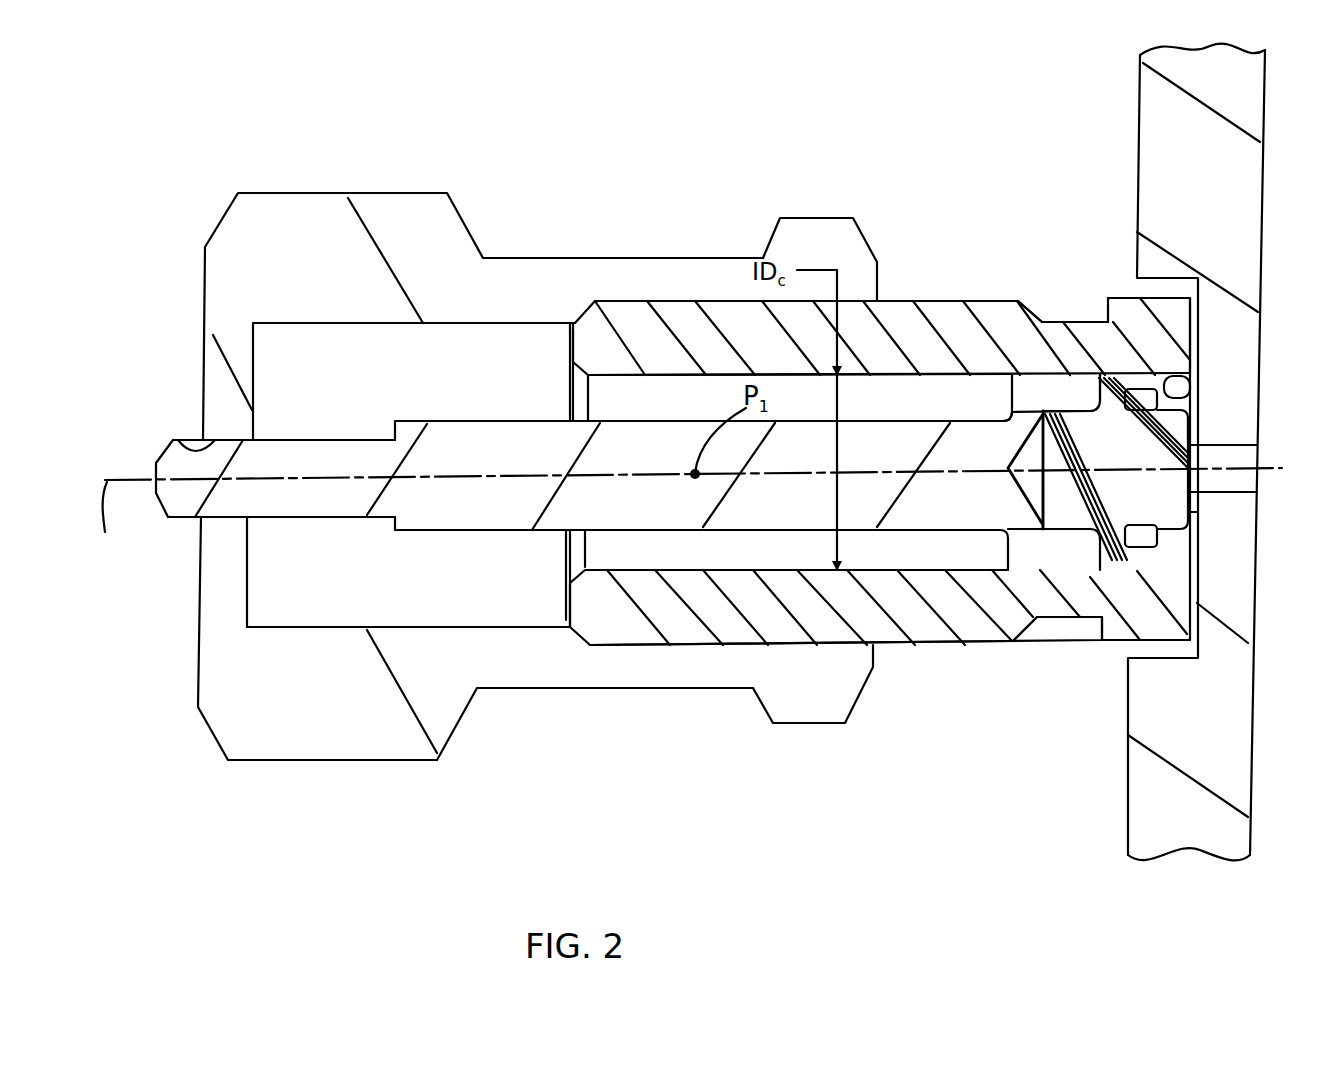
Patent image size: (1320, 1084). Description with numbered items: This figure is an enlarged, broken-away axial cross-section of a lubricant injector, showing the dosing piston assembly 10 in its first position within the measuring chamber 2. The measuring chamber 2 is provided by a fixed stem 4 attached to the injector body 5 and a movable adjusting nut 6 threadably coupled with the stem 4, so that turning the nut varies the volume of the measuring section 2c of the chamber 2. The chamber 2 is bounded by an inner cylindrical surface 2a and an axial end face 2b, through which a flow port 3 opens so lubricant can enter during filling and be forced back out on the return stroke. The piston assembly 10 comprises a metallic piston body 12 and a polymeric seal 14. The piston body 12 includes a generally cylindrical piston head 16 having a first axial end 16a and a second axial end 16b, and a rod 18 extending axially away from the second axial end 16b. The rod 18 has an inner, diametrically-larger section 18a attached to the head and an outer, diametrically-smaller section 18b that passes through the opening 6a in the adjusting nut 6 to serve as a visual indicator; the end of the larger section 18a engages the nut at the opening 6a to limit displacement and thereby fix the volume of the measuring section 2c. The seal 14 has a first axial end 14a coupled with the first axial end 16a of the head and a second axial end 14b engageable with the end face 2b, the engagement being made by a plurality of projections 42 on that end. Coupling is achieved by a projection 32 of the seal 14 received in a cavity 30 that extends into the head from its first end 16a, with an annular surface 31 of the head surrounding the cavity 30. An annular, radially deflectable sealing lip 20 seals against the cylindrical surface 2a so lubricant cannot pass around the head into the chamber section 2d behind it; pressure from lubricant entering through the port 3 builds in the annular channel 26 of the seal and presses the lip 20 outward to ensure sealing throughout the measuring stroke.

The measuring chamber 2 is at (885, 552).
The inner cylindrical surface 2a is at (965, 570).
The axial end face 2b is at (1200, 378).
The measuring section 2c is at (1180, 546).
The chamber section 2d is at (793, 552).
The flow port 3 is at (1242, 448).
The fixed stem 4 is at (910, 299).
The injector body 5 is at (1136, 108).
The adjusting nut 6 is at (343, 190).
The opening 6a is at (180, 440).
The dosing piston assembly 10 is at (363, 603).
The piston body 12 is at (665, 392).
The seal 14 is at (1103, 352).
The seal first axial end 14a is at (1012, 432).
The seal second axial end 14b is at (1218, 445).
The piston head 16 is at (1050, 575).
The first axial end of piston head 16a is at (1046, 360).
The second axial end of piston head 16b is at (1006, 375).
The rod 18 is at (682, 543).
The diametrically-larger rod section 18a is at (512, 432).
The diametrically-smaller rod section 18b is at (318, 447).
The sealing lip 20 is at (1123, 575).
The annular channel 26 is at (1168, 380).
The cavity 30 is at (1046, 489).
The annular surface 31 is at (1120, 400).
The projection 32 is at (1068, 426).
The projections 42 is at (1198, 502).